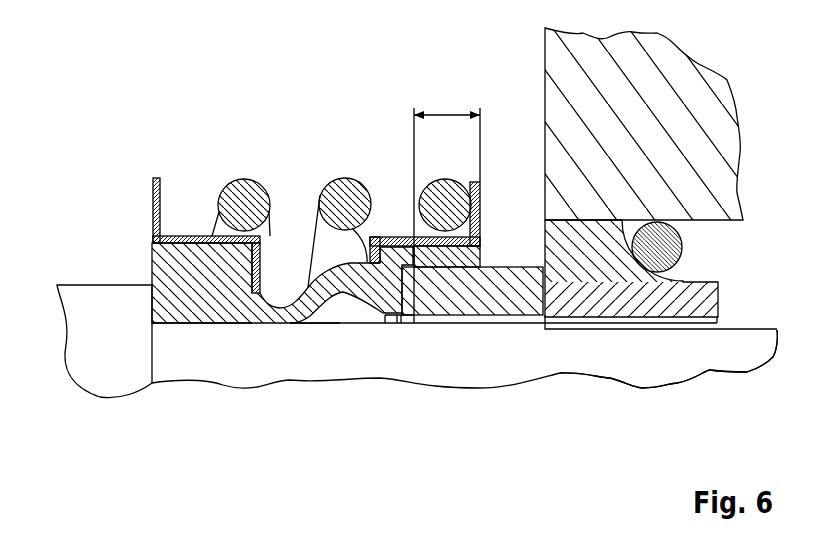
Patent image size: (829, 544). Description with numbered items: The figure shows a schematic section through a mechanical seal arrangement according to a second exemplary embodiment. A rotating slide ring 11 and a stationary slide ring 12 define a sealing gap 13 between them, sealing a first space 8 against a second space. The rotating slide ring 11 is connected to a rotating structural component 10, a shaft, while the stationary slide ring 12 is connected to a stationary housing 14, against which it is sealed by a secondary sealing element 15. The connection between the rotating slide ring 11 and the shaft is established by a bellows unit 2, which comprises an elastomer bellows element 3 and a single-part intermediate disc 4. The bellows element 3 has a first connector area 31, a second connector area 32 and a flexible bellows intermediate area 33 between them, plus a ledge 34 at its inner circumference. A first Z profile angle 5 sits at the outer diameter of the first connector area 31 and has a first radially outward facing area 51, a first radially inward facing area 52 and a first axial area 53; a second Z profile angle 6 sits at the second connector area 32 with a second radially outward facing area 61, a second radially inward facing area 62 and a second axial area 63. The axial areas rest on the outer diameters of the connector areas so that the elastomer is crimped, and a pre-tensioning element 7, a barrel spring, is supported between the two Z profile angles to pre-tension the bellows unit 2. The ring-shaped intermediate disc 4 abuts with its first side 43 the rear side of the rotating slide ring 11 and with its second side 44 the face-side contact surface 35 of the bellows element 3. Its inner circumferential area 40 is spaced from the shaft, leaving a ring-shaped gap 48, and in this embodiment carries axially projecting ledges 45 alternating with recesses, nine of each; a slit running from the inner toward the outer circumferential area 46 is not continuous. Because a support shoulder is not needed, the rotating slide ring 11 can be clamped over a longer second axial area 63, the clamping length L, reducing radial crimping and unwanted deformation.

The bellows unit 2 is at (161, 209).
The bellows element 3 is at (223, 336).
The intermediate disc 4 is at (433, 317).
The first Z profile angle 5 is at (183, 209).
The second Z profile angle 6 is at (454, 184).
The pre-tensioning element 7 is at (247, 190).
The first space 8 is at (315, 105).
The rotating structural component 10 is at (705, 362).
The rotating slide ring 11 is at (512, 307).
The stationary slide ring 12 is at (622, 297).
The sealing gap 13 is at (557, 290).
The housing 14 is at (727, 118).
The secondary sealing element 15 is at (668, 245).
The first connector area 31 is at (197, 268).
The second connector area 32 is at (443, 230).
The bellows intermediate area 33 is at (315, 323).
The ledge 34 is at (333, 265).
The face-side contact surface 35 is at (470, 258).
The inner circumferential area 40 is at (403, 317).
The first side 43 is at (435, 310).
The second side 44 is at (355, 313).
The projecting ledges 45 is at (387, 318).
The outer circumferential area 46 is at (406, 280).
The ring-shaped gap 48 is at (397, 317).
The first radially outward facing area 51 is at (153, 205).
The first radially inward facing area 52 is at (258, 250).
The first axial area 53 is at (203, 236).
The second radially outward facing area 61 is at (478, 215).
The second radially inward facing area 62 is at (348, 228).
The second axial area 63 is at (392, 237).
The clamping length L is at (447, 114).